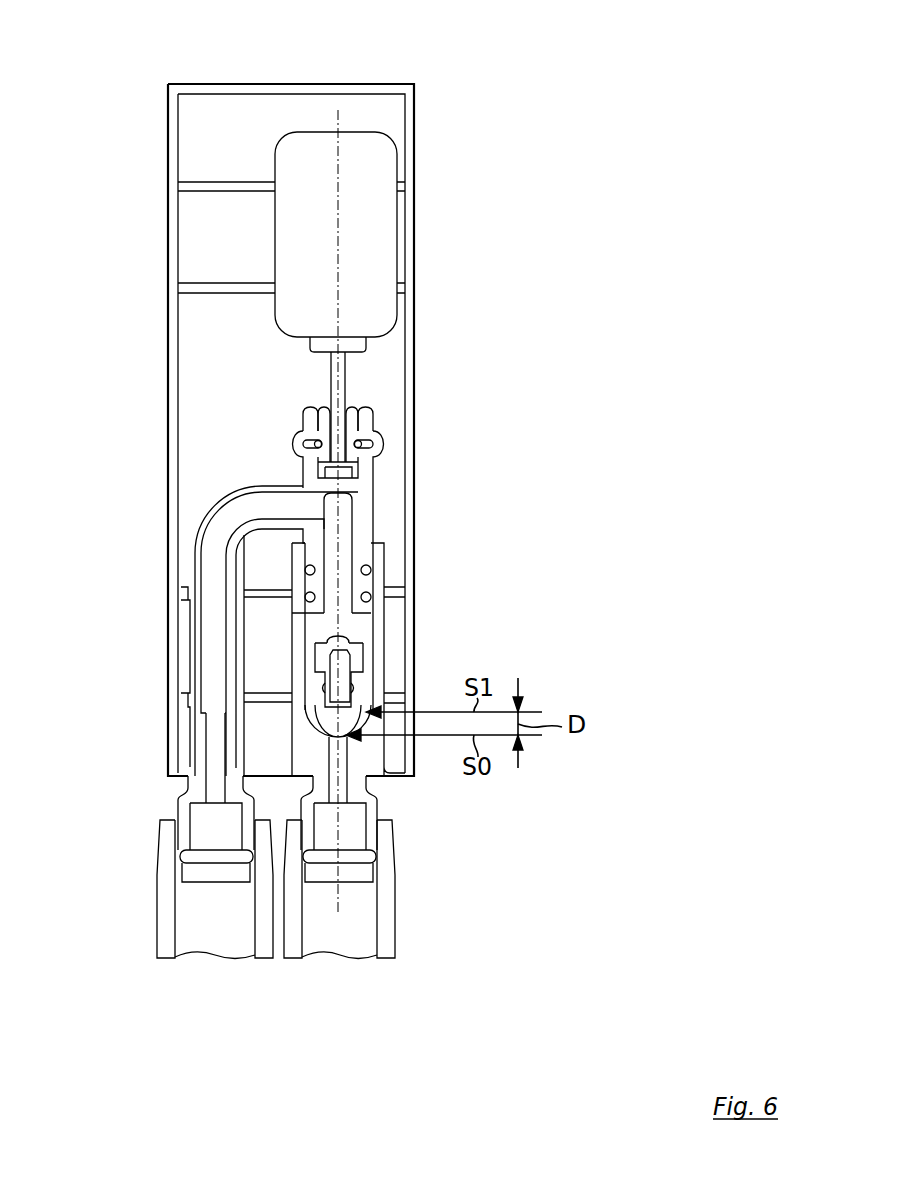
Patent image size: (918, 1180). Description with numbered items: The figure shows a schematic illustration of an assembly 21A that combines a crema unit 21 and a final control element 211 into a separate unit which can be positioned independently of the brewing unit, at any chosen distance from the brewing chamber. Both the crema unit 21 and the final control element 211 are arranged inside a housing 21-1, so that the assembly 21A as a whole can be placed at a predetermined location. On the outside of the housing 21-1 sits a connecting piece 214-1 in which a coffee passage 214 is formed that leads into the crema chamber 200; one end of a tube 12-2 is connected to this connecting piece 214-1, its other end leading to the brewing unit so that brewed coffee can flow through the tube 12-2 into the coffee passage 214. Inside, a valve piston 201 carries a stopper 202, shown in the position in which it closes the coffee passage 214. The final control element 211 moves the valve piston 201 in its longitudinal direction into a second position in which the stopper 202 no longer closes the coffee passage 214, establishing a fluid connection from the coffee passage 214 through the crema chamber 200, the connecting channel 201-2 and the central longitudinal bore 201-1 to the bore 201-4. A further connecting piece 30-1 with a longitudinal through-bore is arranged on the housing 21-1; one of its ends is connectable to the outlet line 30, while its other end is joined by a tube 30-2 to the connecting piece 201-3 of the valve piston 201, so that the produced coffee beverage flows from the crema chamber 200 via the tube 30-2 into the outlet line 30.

The assembly 21A is at (638, 41).
The housing 21-1 is at (414, 158).
The final control element 211 is at (372, 241).
The bore 201-4 is at (292, 500).
The connecting piece 201-3 is at (275, 517).
The tube 30-2 is at (195, 570).
The valve piston 201 is at (327, 599).
The central longitudinal bore 201-1 is at (350, 528).
The connecting channel 201-2 is at (363, 627).
The crema chamber 200 is at (445, 645).
The stopper 202 is at (358, 688).
The crema unit 21 is at (622, 405).
The connecting piece 30-1 is at (185, 803).
The coffee passage 214 is at (343, 773).
The connecting piece 214-1 is at (374, 805).
The outlet line 30 is at (172, 937).
The tube 12-2 is at (390, 938).